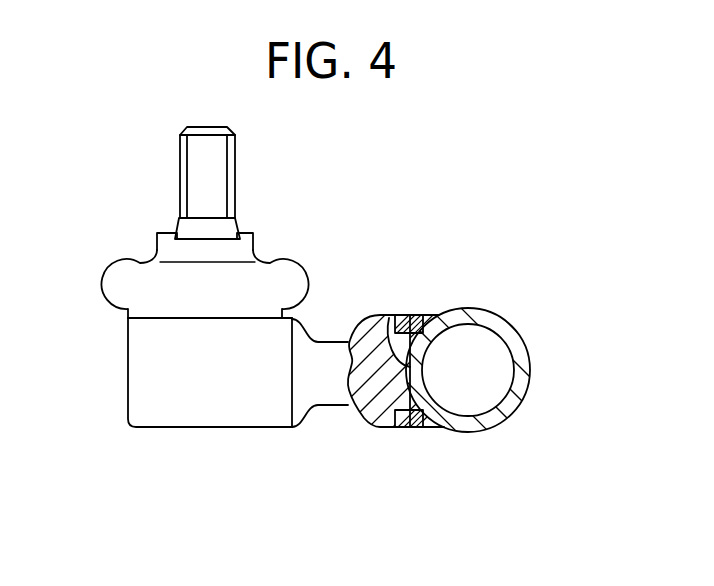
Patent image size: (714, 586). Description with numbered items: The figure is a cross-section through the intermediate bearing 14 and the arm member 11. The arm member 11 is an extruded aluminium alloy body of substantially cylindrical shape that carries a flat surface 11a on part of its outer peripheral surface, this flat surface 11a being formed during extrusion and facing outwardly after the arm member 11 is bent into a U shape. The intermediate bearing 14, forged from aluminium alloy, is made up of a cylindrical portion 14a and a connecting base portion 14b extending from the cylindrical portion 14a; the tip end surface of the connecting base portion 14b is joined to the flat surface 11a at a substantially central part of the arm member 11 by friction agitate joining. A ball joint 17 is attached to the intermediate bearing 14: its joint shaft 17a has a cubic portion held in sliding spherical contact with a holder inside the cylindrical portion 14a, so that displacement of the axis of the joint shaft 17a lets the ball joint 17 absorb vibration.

The arm member 11 is at (517, 310).
The flat surface 11a is at (389, 318).
The intermediate bearing 14 is at (402, 286).
The cylindrical portion 14a is at (237, 347).
The connecting base portion 14b is at (357, 337).
The ball joint 17 is at (128, 251).
The joint shaft 17a is at (202, 186).